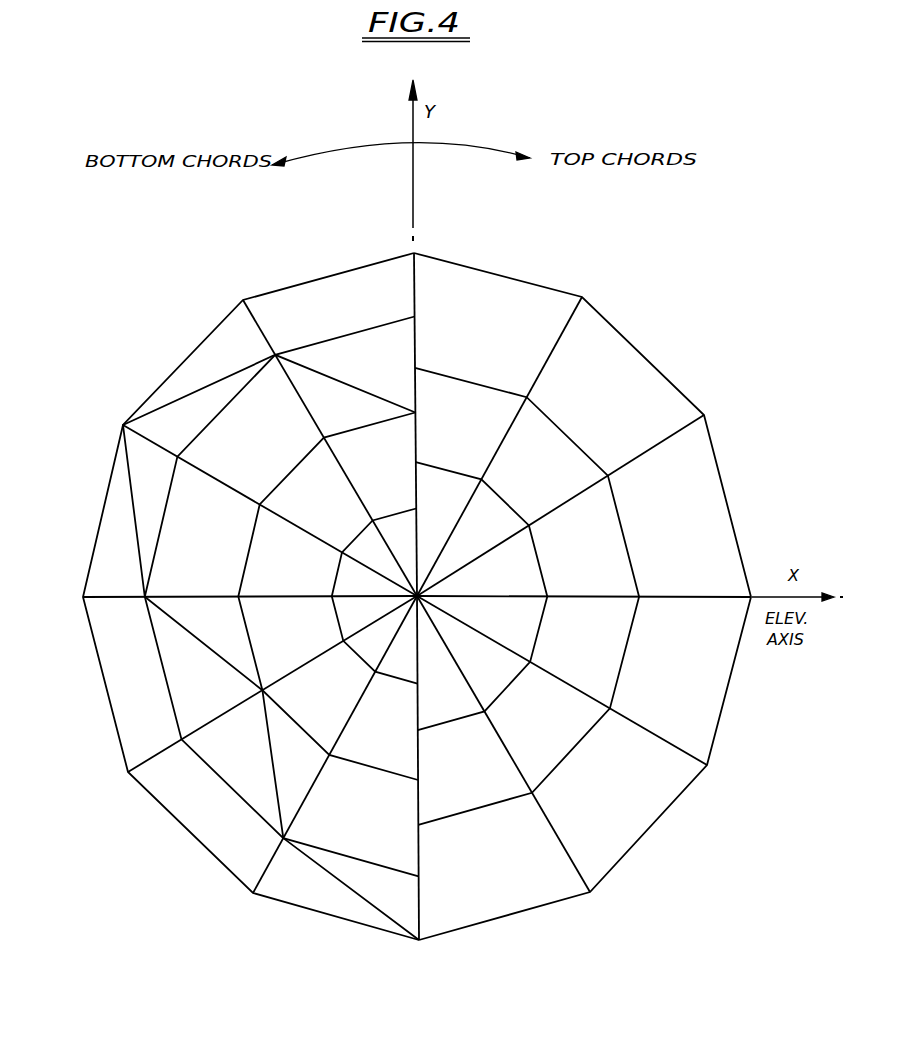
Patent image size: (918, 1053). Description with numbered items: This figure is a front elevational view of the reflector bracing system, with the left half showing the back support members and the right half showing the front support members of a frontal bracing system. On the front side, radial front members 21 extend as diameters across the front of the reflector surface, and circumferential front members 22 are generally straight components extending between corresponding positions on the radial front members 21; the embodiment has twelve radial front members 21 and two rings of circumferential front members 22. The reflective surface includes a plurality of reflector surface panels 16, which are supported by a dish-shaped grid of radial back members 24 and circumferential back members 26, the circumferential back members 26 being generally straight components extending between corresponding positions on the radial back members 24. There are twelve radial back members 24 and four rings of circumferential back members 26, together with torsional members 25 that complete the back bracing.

The reflector surface panels 16 is at (622, 414).
The radial front members 21 is at (416, 284).
The circumferential front members 22 is at (543, 563).
The radial back members 24 is at (240, 493).
The torsional members 25 is at (352, 378).
The circumferential back members 26 is at (207, 337).